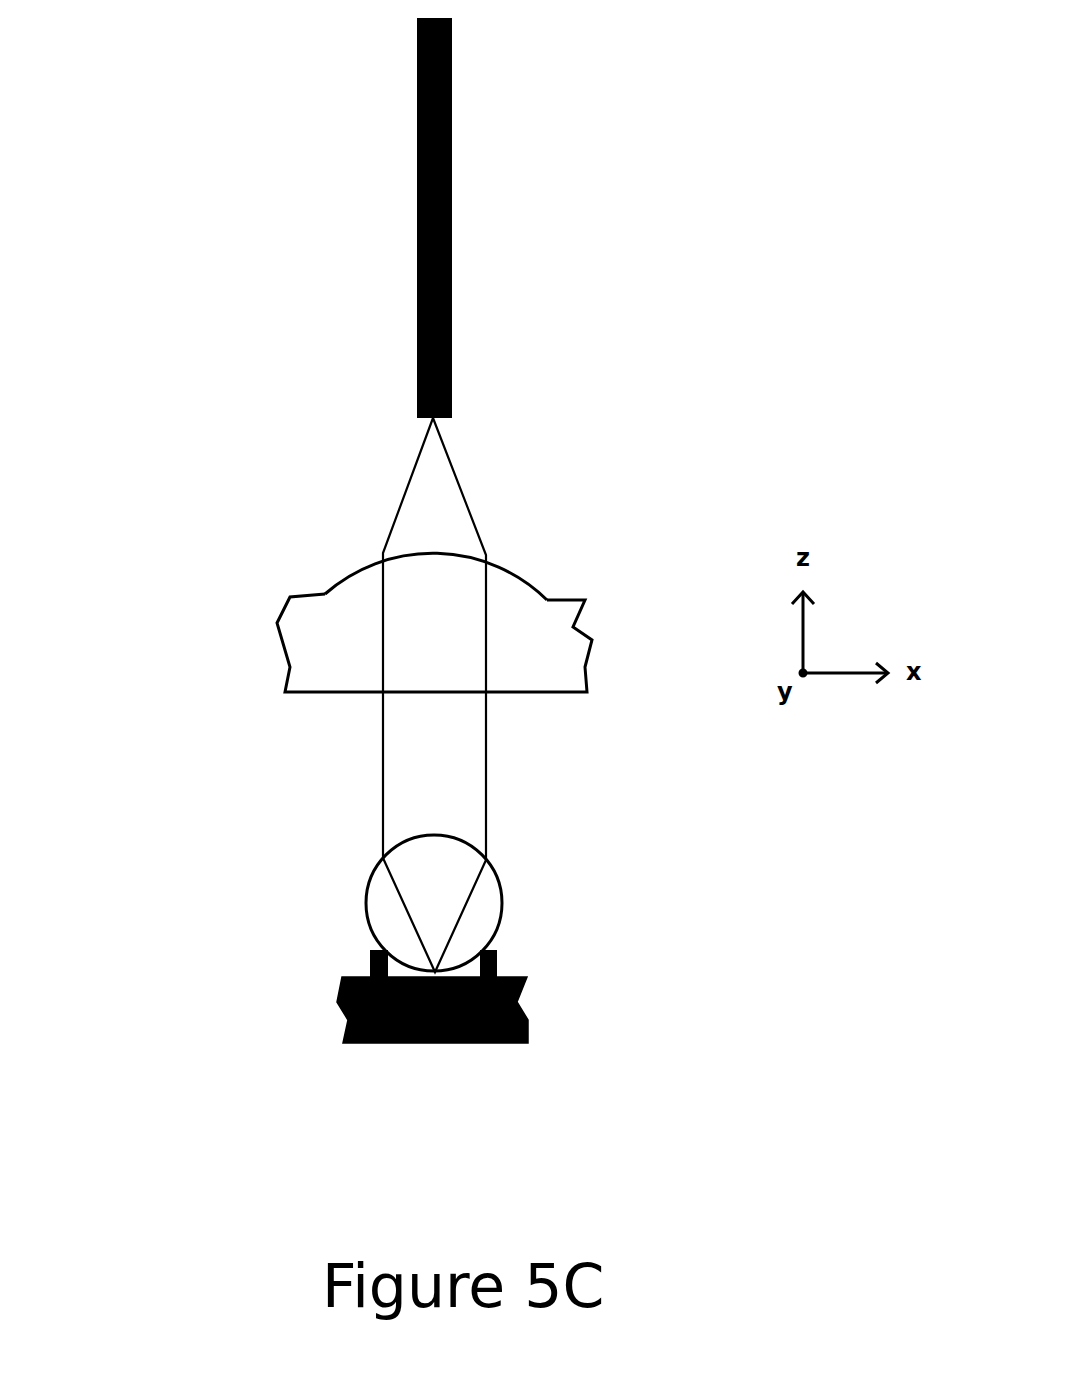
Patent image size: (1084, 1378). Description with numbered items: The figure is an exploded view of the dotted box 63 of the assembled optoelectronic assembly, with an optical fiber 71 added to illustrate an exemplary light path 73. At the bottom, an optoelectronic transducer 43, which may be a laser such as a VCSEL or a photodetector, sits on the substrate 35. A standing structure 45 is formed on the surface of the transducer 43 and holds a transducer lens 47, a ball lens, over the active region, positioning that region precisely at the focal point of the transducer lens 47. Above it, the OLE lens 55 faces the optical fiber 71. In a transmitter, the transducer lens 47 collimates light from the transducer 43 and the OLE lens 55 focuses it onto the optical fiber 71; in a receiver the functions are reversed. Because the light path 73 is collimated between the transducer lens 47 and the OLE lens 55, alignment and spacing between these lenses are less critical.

The optical fiber 71 is at (417, 76).
The dotted box 63 is at (172, 569).
The light path 73 is at (486, 775).
The OLE lens 55 is at (514, 571).
The transducer lens 47 is at (365, 913).
The standing structure 45 is at (368, 962).
The substrate 35 is at (530, 1028).
The optoelectronic transducer 43 is at (397, 1045).